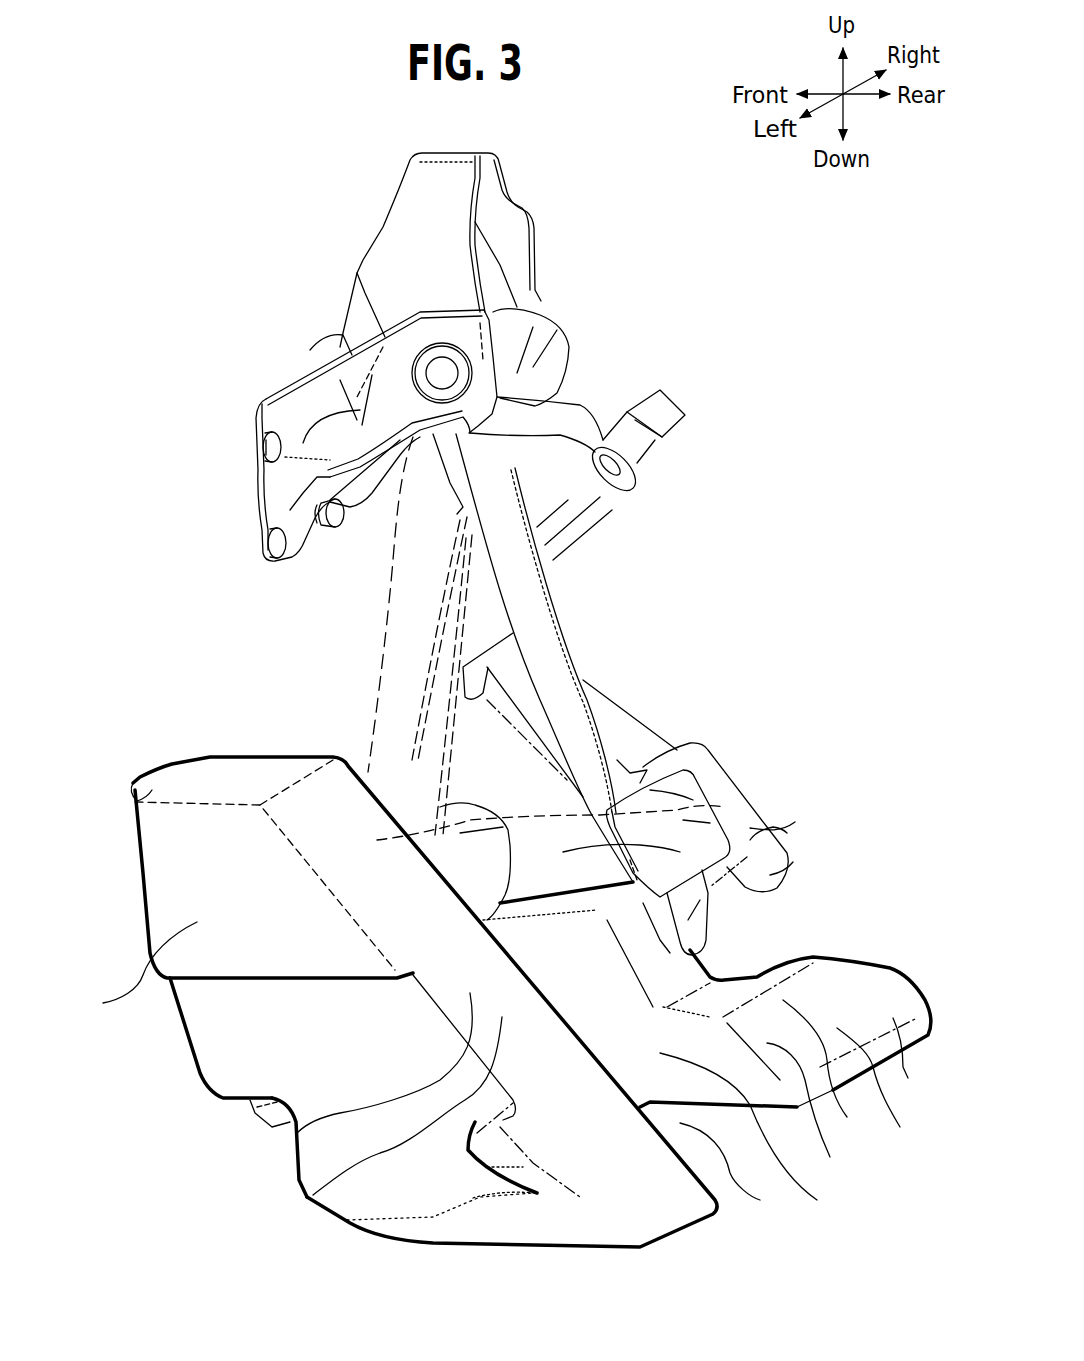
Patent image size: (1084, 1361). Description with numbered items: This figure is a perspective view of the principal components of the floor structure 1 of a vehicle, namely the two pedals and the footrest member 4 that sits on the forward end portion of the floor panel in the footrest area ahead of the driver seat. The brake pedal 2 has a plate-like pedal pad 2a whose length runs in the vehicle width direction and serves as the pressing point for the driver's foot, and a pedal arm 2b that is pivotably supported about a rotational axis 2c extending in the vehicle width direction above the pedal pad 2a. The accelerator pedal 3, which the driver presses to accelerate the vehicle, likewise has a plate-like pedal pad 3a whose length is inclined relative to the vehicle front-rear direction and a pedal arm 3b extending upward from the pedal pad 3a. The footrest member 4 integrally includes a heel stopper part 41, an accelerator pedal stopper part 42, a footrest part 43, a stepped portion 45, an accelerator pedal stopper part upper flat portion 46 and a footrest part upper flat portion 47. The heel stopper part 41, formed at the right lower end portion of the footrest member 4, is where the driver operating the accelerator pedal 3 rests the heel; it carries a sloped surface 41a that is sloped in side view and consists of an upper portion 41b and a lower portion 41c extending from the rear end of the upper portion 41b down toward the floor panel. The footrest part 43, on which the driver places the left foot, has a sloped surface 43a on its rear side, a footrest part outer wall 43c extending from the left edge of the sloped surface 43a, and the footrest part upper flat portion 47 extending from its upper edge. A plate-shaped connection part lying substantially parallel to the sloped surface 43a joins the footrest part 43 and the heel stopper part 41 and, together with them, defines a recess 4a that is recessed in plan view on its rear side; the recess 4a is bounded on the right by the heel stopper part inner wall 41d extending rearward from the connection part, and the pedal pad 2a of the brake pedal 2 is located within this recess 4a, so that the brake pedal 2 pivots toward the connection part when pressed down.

The floor structure 1 is at (228, 250).
The brake pedal 2 is at (713, 783).
The pedal pad 2a is at (695, 775).
The pedal arm 2b is at (535, 610).
The rotational axis 2c is at (441, 378).
The accelerator pedal 3 is at (795, 822).
The pedal pad 3a is at (773, 873).
The pedal arm 3b is at (630, 737).
The footrest member 4 is at (143, 783).
The recess 4a is at (760, 1200).
The heel stopper part 41 is at (900, 1127).
The sloped surface 41a is at (830, 1157).
The upper portion 41b is at (847, 1117).
The lower portion 41c is at (908, 1078).
The heel stopper part inner wall 41d is at (817, 1200).
The accelerator pedal stopper part 42 is at (690, 953).
The footrest part 43 is at (297, 1133).
The sloped surface 43a is at (310, 1193).
The footrest part outer wall 43c is at (223, 1010).
The stepped portion 45 is at (753, 973).
The accelerator pedal stopper part upper flat portion 46 is at (748, 812).
The footrest part upper flat portion 47 is at (243, 780).